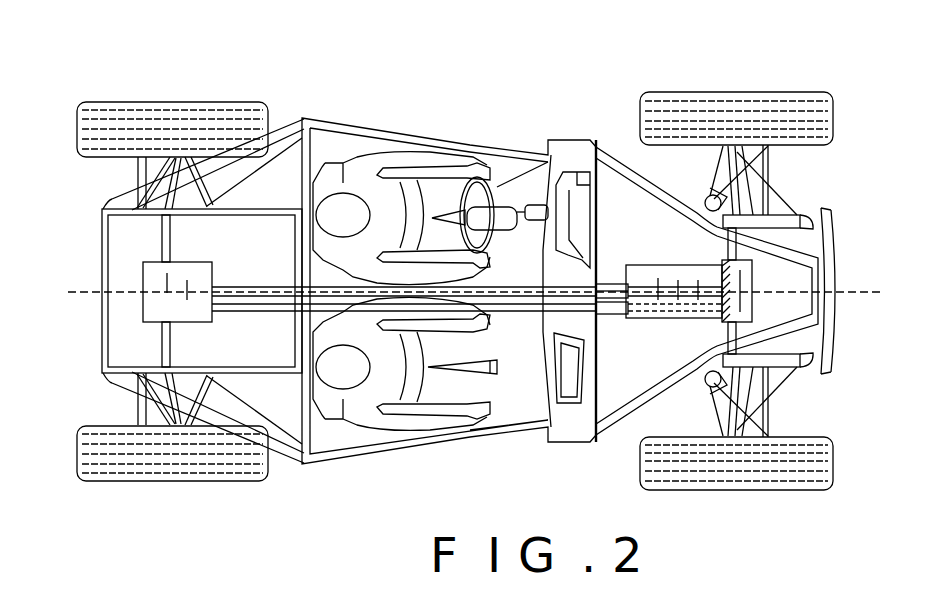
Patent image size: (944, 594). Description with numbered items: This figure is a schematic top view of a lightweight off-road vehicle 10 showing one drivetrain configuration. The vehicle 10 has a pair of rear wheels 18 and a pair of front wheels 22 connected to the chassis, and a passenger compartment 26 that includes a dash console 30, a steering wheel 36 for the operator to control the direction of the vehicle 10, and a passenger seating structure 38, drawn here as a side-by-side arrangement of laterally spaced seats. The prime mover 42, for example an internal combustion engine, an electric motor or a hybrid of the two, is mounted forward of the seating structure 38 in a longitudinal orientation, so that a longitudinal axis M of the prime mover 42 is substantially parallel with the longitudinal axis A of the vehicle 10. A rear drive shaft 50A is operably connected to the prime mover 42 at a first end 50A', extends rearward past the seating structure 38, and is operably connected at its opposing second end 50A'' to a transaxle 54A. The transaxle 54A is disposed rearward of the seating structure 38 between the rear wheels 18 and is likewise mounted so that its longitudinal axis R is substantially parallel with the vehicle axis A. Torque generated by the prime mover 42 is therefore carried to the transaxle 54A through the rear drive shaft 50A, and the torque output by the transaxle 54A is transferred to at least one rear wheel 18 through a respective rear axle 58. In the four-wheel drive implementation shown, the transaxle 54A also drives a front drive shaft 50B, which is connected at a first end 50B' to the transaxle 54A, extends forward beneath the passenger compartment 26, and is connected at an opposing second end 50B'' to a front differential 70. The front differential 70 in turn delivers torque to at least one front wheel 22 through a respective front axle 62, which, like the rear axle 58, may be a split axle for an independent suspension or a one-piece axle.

The off-road vehicle 10 is at (470, 42).
The rear wheels 18 is at (168, 118).
The front wheels 22 is at (762, 108).
The passenger compartment 26 is at (456, 456).
The dash console 30 is at (573, 167).
The steering wheel 36 is at (503, 182).
The passenger seating structure 38 is at (333, 163).
The prime mover 42 is at (667, 283).
The rear drive shaft 50A is at (449, 395).
The first end of rear drive shaft 50A' is at (621, 248).
The second end of rear drive shaft 50A'' is at (257, 264).
The front drive shaft 50B is at (619, 345).
The first end of front drive shaft 50B' is at (257, 331).
The second end of front drive shaft 50B'' is at (675, 330).
The transaxle 54A is at (157, 308).
The rear axle 58 is at (160, 190).
The front axle 62 is at (742, 197).
The front differential 70 is at (738, 281).
The longitudinal axis of the vehicle A is at (469, 293).
The longitudinal axis of the prime mover M is at (701, 280).
The longitudinal axis of the transaxle R is at (132, 292).